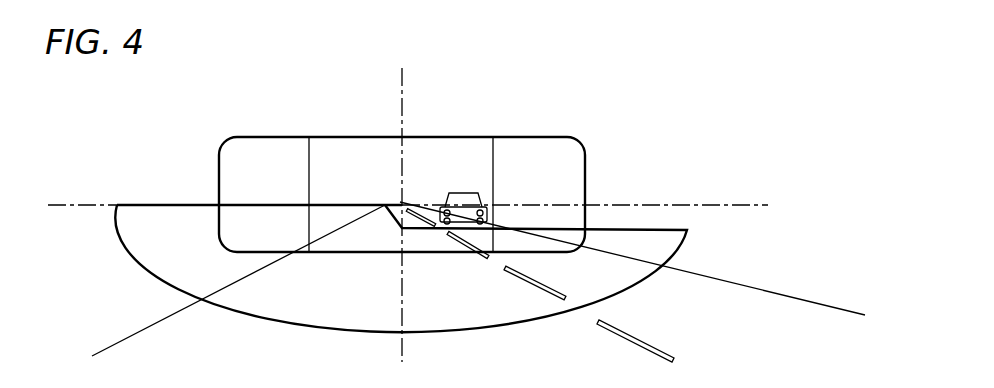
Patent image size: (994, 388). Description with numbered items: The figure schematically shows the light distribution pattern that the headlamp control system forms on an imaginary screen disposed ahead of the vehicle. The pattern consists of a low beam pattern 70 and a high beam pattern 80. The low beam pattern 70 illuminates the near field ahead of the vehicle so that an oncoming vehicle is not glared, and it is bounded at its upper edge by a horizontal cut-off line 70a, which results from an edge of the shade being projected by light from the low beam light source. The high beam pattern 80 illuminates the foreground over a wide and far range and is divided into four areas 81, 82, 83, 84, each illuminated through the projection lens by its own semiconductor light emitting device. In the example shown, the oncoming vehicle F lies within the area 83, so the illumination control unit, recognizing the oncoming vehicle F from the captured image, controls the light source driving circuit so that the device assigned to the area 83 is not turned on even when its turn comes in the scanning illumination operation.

The low beam pattern 70 is at (487, 319).
The horizontal cut-off line 70a is at (175, 203).
The high beam pattern 80 is at (567, 137).
The area 81 is at (265, 148).
The area 82 is at (355, 148).
The area 83 is at (447, 148).
The area 84 is at (533, 148).
The oncoming vehicle F is at (463, 197).